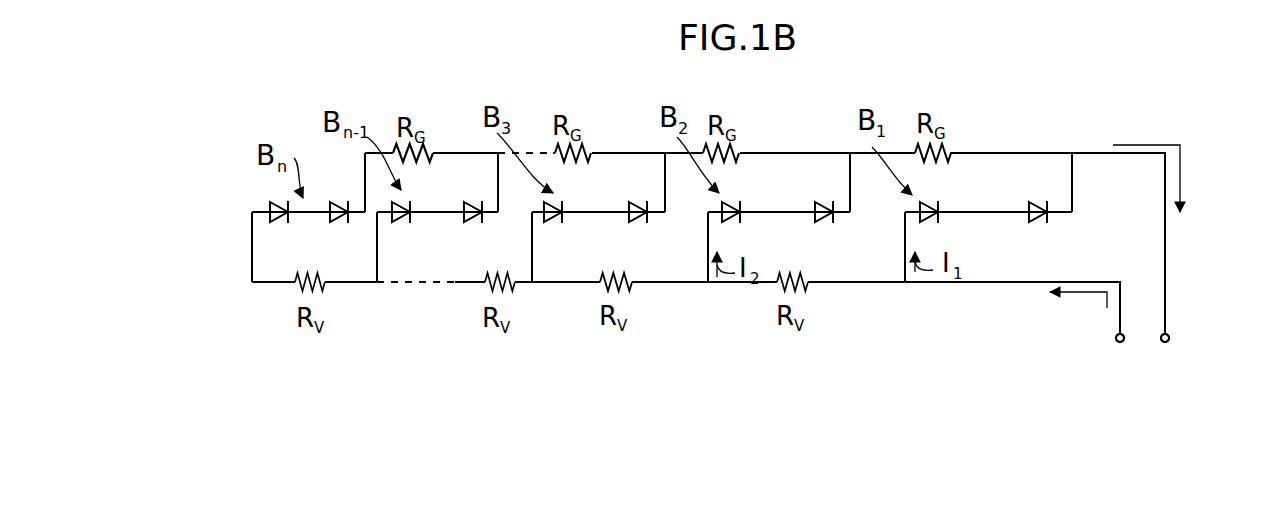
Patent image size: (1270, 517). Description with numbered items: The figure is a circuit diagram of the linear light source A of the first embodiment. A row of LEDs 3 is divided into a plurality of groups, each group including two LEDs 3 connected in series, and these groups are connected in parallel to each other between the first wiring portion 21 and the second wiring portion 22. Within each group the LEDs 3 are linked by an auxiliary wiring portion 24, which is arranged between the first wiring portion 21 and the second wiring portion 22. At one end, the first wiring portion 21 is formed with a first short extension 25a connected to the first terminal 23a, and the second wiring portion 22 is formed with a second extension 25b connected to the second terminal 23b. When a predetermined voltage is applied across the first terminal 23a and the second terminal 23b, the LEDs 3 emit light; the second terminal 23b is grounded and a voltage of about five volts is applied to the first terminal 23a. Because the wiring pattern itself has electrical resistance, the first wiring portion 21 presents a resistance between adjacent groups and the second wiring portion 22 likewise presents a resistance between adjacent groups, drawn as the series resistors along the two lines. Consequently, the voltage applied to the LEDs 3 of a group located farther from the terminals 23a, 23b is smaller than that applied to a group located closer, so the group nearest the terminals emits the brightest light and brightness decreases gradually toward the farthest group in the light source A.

The LED 3 is at (338, 222).
The auxiliary wiring portion 24 is at (565, 212).
The second wiring portion 22 is at (786, 152).
The first wiring portion 21 is at (827, 283).
The first short extension 25a is at (1118, 313).
The second extension 25b is at (1167, 275).
The first terminal 23a is at (1117, 342).
The second terminal 23b is at (1170, 337).
The linear light source A is at (1053, 137).